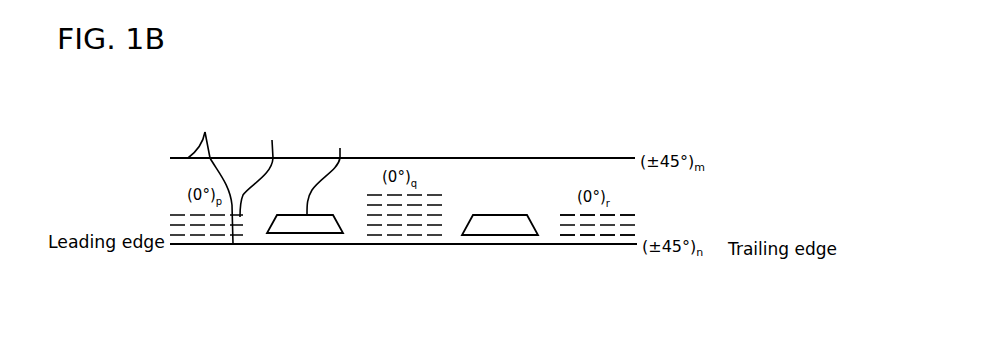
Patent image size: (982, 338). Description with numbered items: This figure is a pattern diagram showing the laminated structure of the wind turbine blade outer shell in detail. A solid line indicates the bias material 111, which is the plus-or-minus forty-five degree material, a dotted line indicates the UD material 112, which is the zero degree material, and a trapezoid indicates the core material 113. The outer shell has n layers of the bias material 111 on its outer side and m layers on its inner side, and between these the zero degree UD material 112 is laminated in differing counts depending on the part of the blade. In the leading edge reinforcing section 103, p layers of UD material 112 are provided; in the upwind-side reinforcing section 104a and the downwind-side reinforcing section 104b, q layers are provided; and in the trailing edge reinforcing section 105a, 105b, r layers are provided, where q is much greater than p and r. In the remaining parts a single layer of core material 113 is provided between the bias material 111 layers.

The leading edge reinforcing section 103 is at (203, 252).
The upwind-side reinforcing section 104a is at (400, 252).
The downwind-side reinforcing section 104b is at (400, 252).
The trailing edge reinforcing section 105a is at (595, 253).
The trailing edge reinforcing section 105b is at (595, 253).
The bias material 111 is at (210, 177).
The UD material 112 is at (265, 174).
The core material 113 is at (332, 172).